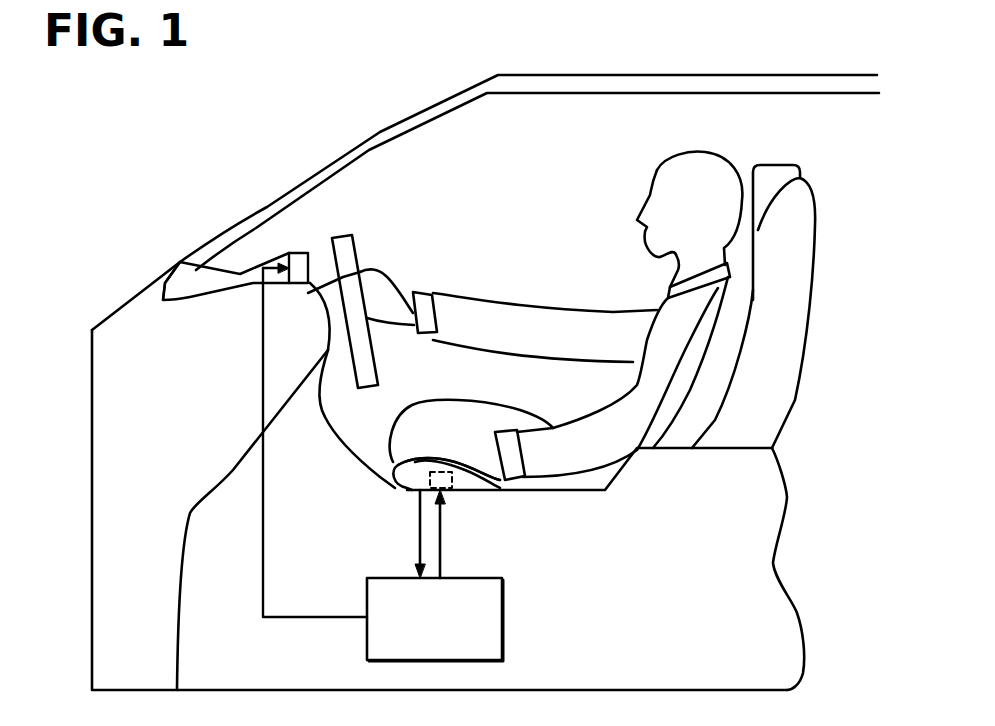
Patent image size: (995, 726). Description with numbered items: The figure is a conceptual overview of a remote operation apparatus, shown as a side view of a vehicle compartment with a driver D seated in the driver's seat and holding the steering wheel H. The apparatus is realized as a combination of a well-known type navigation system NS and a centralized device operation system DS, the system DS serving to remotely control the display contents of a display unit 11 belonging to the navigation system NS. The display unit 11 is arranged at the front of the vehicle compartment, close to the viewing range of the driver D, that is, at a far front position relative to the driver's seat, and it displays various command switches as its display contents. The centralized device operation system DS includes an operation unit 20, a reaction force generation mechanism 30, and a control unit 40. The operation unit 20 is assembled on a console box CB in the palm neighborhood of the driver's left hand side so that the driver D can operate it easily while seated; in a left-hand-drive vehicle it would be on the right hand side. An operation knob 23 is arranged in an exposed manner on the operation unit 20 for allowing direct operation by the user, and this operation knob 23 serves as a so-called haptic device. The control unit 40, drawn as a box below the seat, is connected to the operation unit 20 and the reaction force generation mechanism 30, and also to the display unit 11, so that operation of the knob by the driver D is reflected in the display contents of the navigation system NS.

The console box CB is at (365, 523).
The navigation system NS is at (272, 243).
The display unit 11 is at (297, 250).
The steering wheel H is at (343, 237).
The driver D is at (700, 152).
The operation knob 23 is at (417, 473).
The reaction force generation mechanism 30 is at (455, 491).
The operation unit 20 is at (483, 491).
The centralized device operation system DS is at (557, 528).
The control unit 40 is at (503, 618).